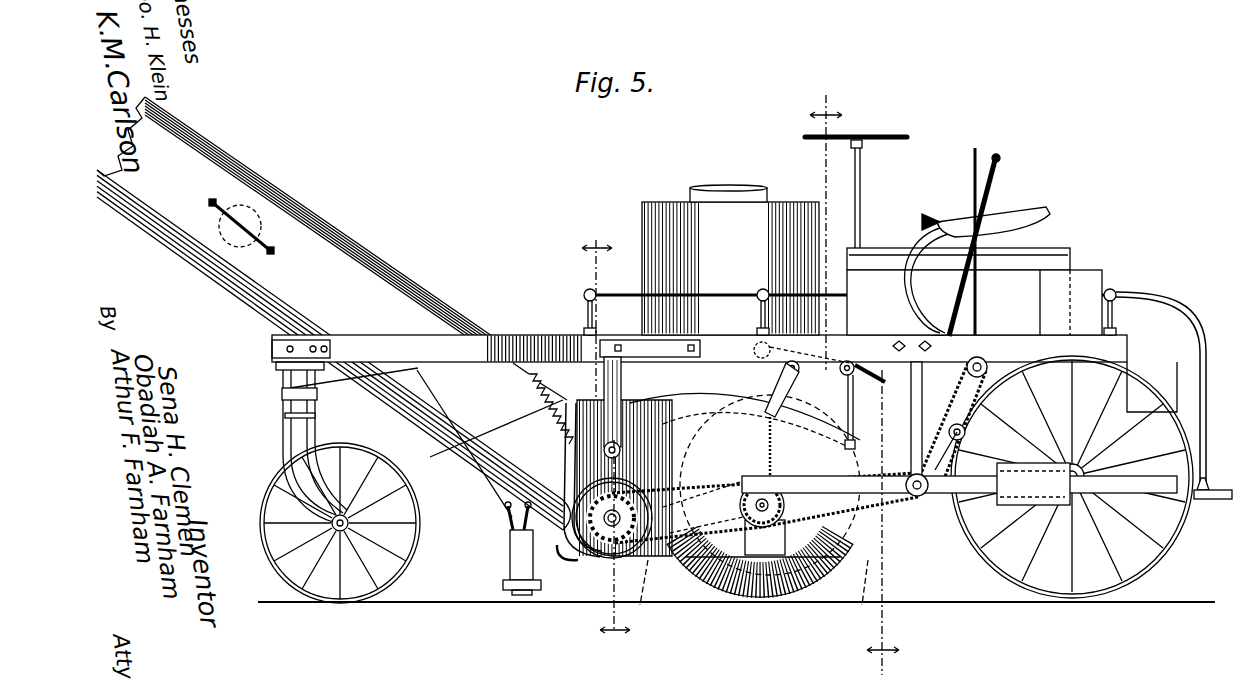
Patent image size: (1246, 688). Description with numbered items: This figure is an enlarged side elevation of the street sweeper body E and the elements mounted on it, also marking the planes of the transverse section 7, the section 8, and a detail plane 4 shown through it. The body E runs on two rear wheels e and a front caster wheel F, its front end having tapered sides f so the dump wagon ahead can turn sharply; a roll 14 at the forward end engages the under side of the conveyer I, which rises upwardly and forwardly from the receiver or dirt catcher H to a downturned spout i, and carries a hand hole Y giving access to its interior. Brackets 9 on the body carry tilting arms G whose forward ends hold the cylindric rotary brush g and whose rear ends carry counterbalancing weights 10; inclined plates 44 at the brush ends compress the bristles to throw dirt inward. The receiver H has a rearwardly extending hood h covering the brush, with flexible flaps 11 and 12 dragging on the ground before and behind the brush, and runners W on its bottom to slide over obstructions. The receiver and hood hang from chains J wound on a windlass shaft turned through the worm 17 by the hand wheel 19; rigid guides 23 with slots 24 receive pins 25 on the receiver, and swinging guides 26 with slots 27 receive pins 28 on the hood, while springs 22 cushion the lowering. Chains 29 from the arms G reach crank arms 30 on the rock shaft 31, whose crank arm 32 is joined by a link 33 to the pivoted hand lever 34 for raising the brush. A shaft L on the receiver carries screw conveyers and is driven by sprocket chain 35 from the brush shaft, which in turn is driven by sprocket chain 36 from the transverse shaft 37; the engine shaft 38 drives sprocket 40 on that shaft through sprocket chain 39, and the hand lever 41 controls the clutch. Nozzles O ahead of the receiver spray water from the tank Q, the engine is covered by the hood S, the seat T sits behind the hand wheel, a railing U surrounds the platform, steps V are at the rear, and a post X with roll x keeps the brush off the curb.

The hand hole Y is at (245, 222).
The conveyer I is at (385, 270).
The springs 22 is at (426, 421).
The body E is at (441, 343).
The tapered sides f is at (481, 345).
The roll 14 is at (272, 343).
The bracket plate 4 is at (268, 368).
The front caster wheel F is at (282, 476).
The post X is at (506, 542).
The roll or wheel x is at (503, 585).
The receiver or dirt catcher H is at (624, 478).
The shaft L is at (568, 546).
The slots 24 is at (700, 396).
The hood h is at (761, 485).
The chains J is at (650, 378).
The rigid guides 23 is at (668, 352).
The pins or bolts 25 is at (648, 436).
The runners W is at (610, 560).
The sprocket chain 35 is at (702, 560).
The sprocket chain 36 is at (866, 556).
The rotary brush g is at (783, 592).
The inclined plates 44 is at (724, 586).
The transverse shaft 37 is at (914, 502).
The crank arms 30 is at (784, 372).
The chains 29 is at (769, 433).
The swinging guides 26 is at (843, 375).
The slots 27 is at (853, 433).
The bolts or pins 28 is at (856, 445).
The crank arm 32 is at (760, 344).
The rock shaft 31 is at (838, 363).
The link 33 is at (886, 362).
The downturned spout i is at (866, 378).
The worm 17 is at (888, 402).
The tank Q is at (668, 212).
The railing U is at (620, 300).
The nozzles O is at (553, 336).
The hand wheel 19 is at (892, 134).
The hood S is at (1054, 248).
The seat T is at (1036, 210).
The hand lever 41 is at (973, 171).
The pivoted hand lever 34 is at (990, 177).
The rear wheels e is at (1158, 568).
The steps V is at (1140, 410).
The sprocket chain 39 is at (965, 411).
The shaft 38 is at (978, 380).
The brackets 9 is at (950, 438).
The sprocket 40 is at (948, 468).
The tilting arms G is at (957, 492).
The weights 10 is at (1036, 502).
The section line 7 is at (854, 389).
The section line 8 is at (606, 441).
The flexible flap 11 is at (638, 593).
The flexible flap 12 is at (868, 594).